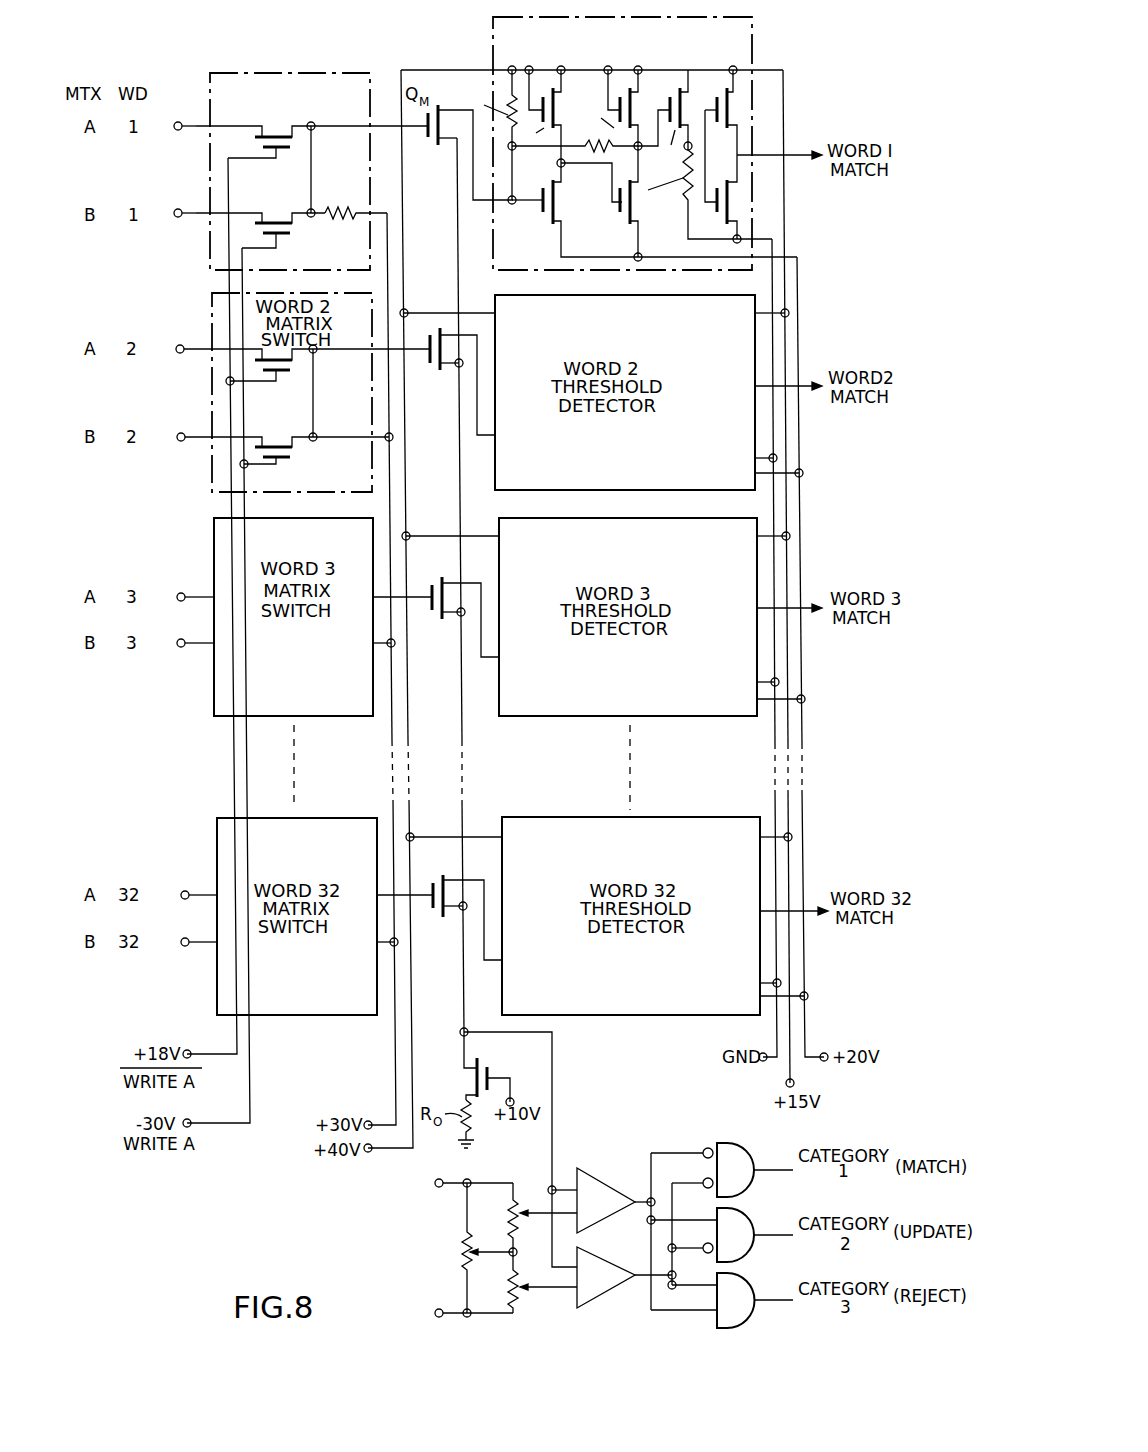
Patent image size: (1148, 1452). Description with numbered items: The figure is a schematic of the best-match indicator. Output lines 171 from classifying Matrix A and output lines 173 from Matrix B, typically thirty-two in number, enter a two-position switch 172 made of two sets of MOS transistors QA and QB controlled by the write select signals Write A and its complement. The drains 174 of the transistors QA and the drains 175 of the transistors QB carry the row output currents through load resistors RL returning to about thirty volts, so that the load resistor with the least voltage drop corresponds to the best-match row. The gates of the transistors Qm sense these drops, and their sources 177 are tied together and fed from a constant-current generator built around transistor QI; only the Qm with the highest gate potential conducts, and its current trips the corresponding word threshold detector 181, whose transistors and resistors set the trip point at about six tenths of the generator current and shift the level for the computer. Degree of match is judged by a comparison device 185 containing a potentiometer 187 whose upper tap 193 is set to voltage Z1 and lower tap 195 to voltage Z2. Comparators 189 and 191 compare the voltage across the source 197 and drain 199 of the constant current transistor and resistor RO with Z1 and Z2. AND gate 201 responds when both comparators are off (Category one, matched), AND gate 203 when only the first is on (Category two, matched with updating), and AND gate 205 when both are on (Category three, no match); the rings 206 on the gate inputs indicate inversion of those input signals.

The output lines 171 is at (196, 126).
The output lines 173 is at (200, 213).
The two-position switch 172 is at (318, 73).
The drains 174 is at (314, 130).
The drains 175 is at (309, 217).
The word threshold detector 181 is at (493, 40).
The sources 177 is at (448, 368).
The drain 199 is at (466, 1068).
The source 197 is at (466, 1090).
The potentiometer 187 is at (443, 1238).
The upper tap 193 is at (528, 1205).
The lower tap 195 is at (528, 1290).
The comparator 189 is at (593, 1176).
The comparator 191 is at (600, 1252).
The comparison device 185 is at (610, 1236).
The rings 206 is at (705, 1149).
The AND gate 201 is at (727, 1145).
The AND gate 203 is at (733, 1211).
The AND gate 205 is at (733, 1276).